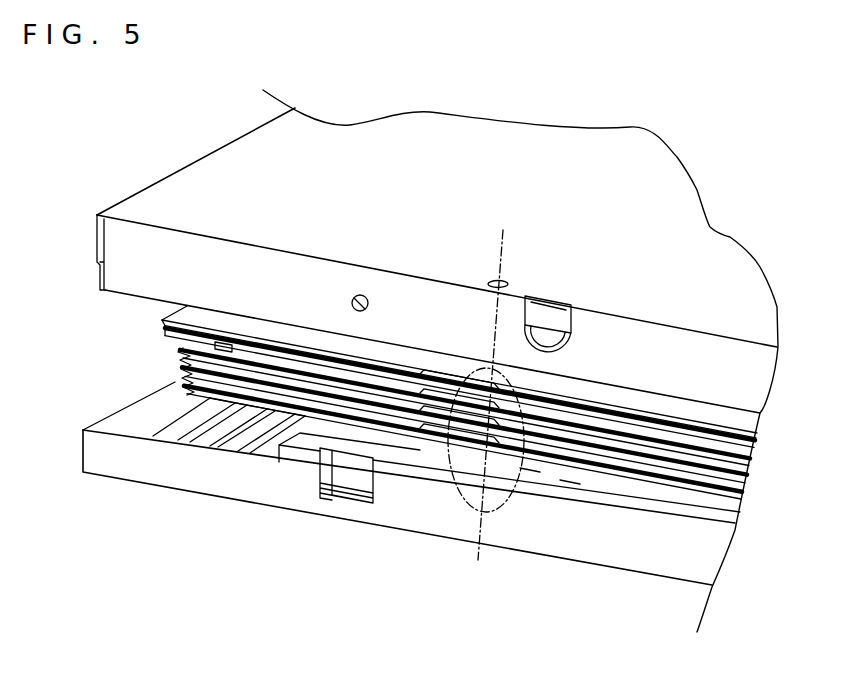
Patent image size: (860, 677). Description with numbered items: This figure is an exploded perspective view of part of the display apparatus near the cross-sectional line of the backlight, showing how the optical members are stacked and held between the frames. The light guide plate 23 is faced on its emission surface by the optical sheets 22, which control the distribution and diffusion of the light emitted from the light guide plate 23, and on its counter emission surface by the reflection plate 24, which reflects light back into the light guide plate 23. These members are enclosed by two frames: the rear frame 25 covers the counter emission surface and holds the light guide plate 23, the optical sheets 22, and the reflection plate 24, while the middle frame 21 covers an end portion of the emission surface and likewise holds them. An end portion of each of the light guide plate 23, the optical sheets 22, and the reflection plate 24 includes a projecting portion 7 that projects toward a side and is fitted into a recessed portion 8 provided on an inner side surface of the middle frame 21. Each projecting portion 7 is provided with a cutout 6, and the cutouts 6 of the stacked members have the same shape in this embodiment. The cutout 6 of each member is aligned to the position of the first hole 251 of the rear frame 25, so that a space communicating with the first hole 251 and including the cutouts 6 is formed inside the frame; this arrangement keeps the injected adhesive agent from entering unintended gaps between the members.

The middle frame 21 is at (97, 453).
The optical sheets 22 is at (176, 350).
The light guide plate 23 is at (167, 340).
The reflection plate 24 is at (160, 318).
The rear frame 25 is at (122, 252).
The first hole 251 is at (510, 283).
The cutout 6 is at (496, 384).
The projecting portion 7 is at (528, 467).
The recessed portion 8 is at (567, 485).